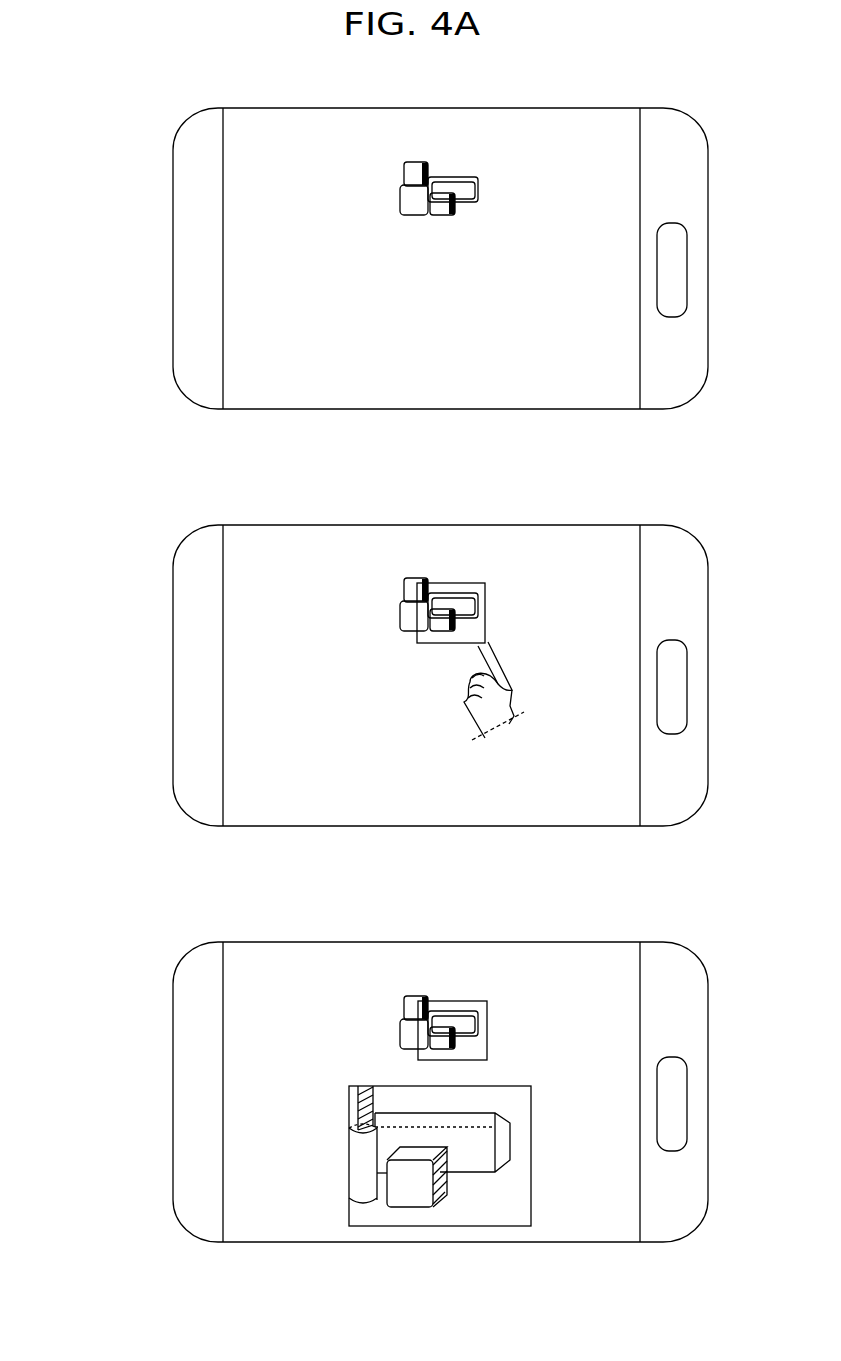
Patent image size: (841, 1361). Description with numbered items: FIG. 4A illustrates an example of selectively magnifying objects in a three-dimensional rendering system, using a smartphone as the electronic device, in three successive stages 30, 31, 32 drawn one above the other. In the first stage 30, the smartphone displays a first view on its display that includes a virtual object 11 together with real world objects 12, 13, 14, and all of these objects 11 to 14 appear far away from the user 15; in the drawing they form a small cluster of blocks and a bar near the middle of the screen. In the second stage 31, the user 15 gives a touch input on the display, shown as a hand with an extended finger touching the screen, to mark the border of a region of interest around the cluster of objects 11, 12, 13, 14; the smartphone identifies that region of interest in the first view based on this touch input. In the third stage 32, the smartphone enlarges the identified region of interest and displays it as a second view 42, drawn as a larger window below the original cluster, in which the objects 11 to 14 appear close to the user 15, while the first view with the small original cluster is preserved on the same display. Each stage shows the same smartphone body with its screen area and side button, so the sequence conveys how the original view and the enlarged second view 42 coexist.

The first view state 30 is at (385, 235).
The touch input state 31 is at (385, 652).
The enlarged view state 32 is at (385, 1068).
The virtual object 11 is at (458, 211).
The real world object 12 is at (400, 205).
The real world object 13 is at (413, 160).
The real world object 14 is at (445, 178).
The user 15 is at (485, 706).
The second view 42 is at (531, 1160).